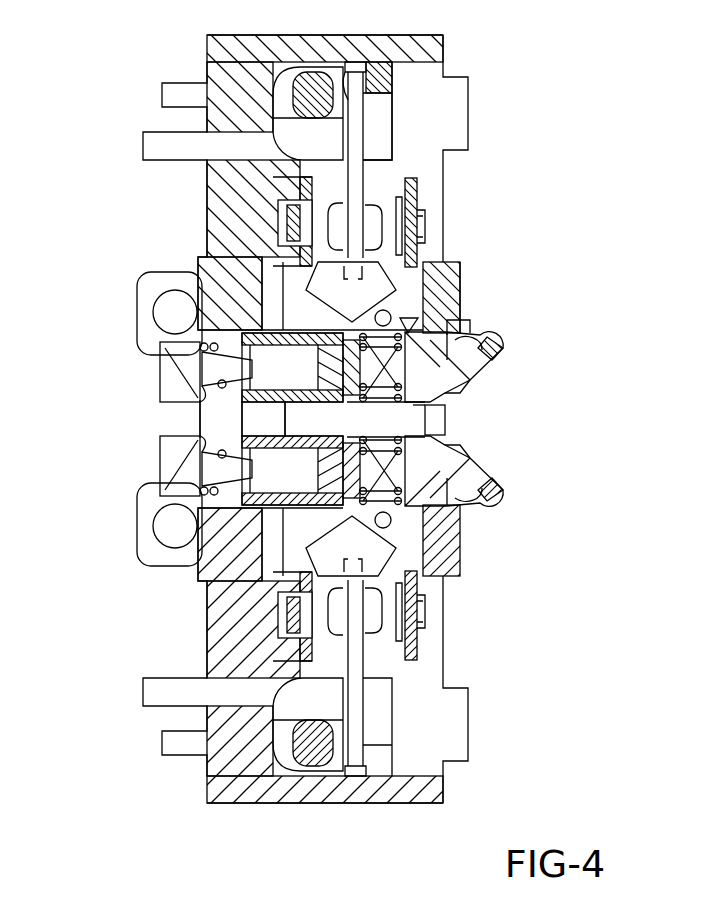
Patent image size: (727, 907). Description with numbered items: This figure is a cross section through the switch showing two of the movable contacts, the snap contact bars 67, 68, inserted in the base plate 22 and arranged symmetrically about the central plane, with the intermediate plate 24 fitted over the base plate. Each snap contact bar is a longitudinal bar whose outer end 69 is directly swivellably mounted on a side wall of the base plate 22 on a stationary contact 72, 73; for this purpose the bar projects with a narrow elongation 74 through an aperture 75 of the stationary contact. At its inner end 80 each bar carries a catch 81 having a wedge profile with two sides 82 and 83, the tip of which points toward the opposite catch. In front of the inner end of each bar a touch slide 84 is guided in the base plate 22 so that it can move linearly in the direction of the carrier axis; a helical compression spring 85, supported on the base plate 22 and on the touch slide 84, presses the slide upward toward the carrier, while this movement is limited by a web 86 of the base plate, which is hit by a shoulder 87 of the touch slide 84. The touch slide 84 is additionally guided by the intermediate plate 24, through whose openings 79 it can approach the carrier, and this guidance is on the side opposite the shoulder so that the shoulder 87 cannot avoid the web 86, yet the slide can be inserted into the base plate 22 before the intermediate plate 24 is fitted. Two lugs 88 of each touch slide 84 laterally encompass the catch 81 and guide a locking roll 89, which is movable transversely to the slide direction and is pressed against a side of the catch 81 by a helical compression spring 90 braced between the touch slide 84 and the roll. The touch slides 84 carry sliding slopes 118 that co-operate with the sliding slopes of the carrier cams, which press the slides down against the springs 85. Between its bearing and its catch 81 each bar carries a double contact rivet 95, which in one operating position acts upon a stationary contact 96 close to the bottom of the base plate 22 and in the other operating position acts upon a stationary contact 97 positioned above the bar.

The base plate 22 is at (207, 212).
The intermediate plate 24 is at (463, 292).
The movable contact (snap contact bar) 67 is at (366, 710).
The movable contact (snap contact bar) 68 is at (366, 176).
The outer end 69 is at (363, 107).
The stationary contact 72 is at (330, 795).
The stationary contact 73 is at (300, 82).
The narrow elongation 74 is at (356, 62).
The aperture 75 is at (370, 68).
The openings 79 is at (500, 357).
The inner end 80 is at (302, 275).
The catch 81 is at (432, 283).
The side of catch 82 is at (418, 320).
The side of catch 83 is at (462, 305).
The touch slide 84 is at (468, 390).
The helical compression spring 85 is at (200, 407).
The web 86 is at (470, 448).
The shoulder 87 is at (446, 422).
The lugs 88 is at (462, 317).
The locking roll 89 is at (432, 532).
The helical compression spring 90 is at (470, 490).
The double contact rivet 95 is at (366, 203).
The stationary contact 96 is at (300, 195).
The stationary contact 97 is at (392, 222).
The sliding slopes 118 is at (483, 375).